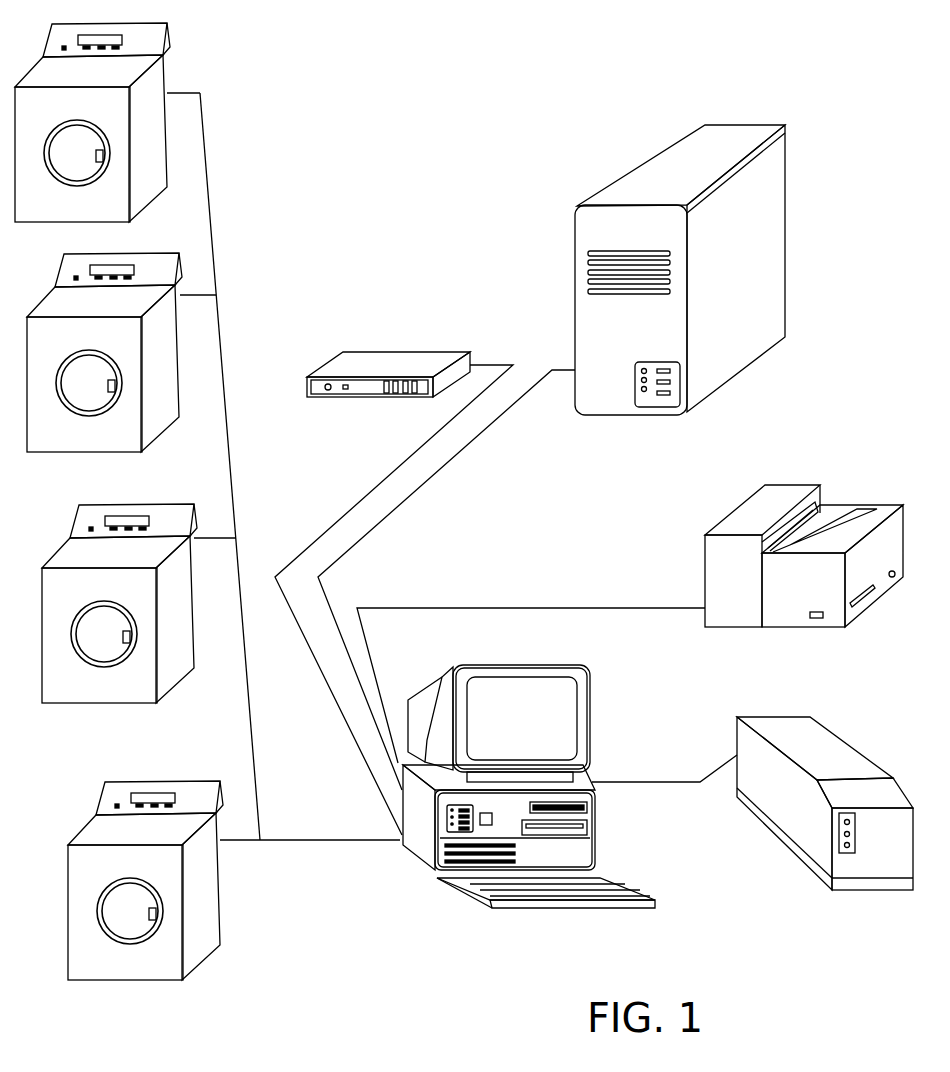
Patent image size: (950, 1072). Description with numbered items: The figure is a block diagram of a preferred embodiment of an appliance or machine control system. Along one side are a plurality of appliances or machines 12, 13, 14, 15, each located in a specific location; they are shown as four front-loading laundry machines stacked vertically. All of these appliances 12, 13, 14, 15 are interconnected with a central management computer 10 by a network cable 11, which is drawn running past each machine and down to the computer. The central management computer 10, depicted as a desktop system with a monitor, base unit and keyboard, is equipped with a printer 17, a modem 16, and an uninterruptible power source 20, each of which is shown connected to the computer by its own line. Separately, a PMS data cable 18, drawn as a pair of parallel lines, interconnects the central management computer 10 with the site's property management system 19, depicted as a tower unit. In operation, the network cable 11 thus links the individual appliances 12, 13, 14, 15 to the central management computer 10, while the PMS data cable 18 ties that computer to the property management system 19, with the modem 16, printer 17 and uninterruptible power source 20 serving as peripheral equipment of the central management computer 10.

The central management computer 10 is at (587, 842).
The network cable 11 is at (285, 840).
The appliance or machine 12 is at (193, 933).
The appliance or machine 13 is at (173, 663).
The appliance or machine 14 is at (155, 418).
The appliance or machine 15 is at (140, 175).
The modem 16 is at (350, 360).
The printer 17 is at (777, 618).
The PMS data cable 18 is at (487, 428).
The property management system 19 is at (595, 228).
The uninterruptible power source 20 is at (792, 817).